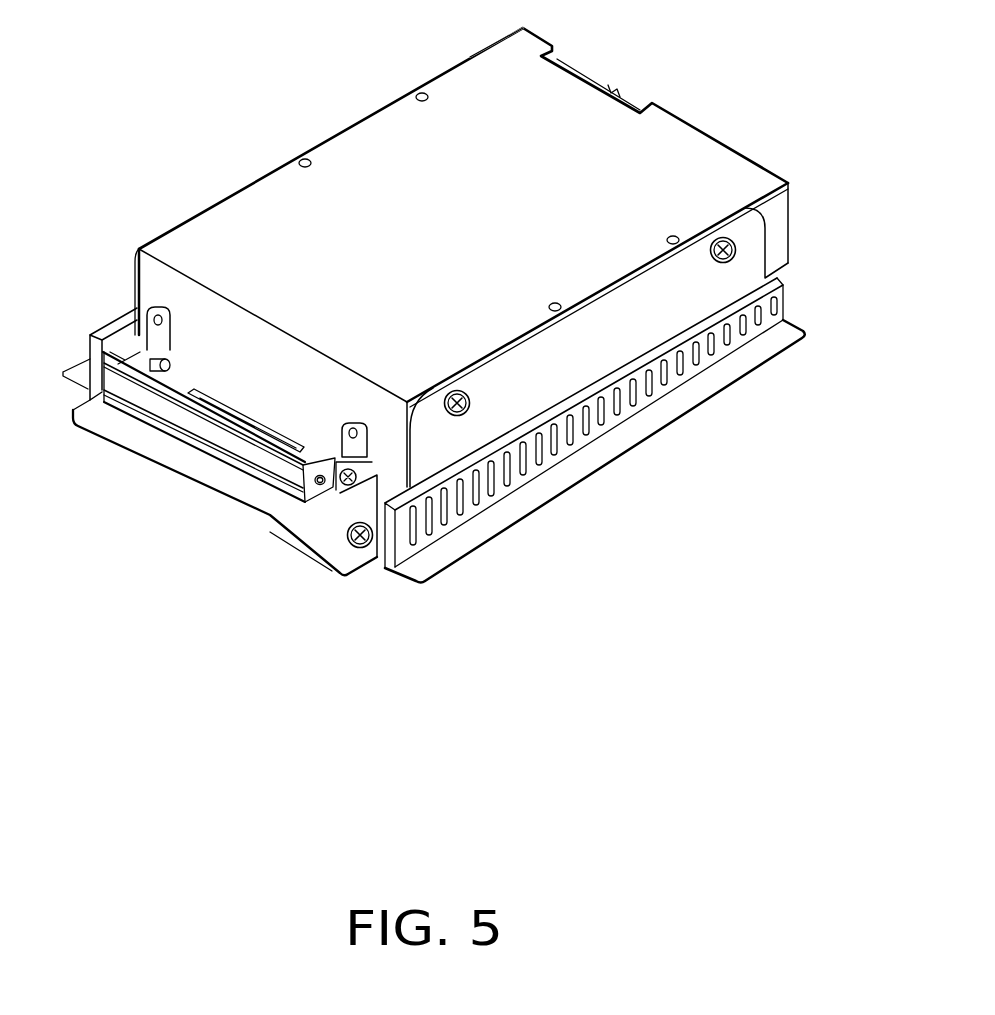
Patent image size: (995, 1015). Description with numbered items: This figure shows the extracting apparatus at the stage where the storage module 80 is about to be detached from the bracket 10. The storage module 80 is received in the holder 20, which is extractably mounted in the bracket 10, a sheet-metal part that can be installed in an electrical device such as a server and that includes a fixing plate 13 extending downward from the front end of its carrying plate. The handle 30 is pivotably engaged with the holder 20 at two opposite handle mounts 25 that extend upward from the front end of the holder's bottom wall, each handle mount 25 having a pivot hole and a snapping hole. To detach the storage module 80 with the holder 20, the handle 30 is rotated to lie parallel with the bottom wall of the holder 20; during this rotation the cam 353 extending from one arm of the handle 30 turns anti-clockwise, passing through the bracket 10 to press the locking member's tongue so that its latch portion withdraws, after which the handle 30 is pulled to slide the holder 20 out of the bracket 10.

The storage module 80 is at (647, 150).
The holder 20 is at (753, 246).
The bracket 10 is at (705, 368).
The handle 30 is at (181, 420).
The handle mount 25 is at (366, 422).
The cam 353 is at (345, 492).
The fixing plate 13 is at (338, 515).